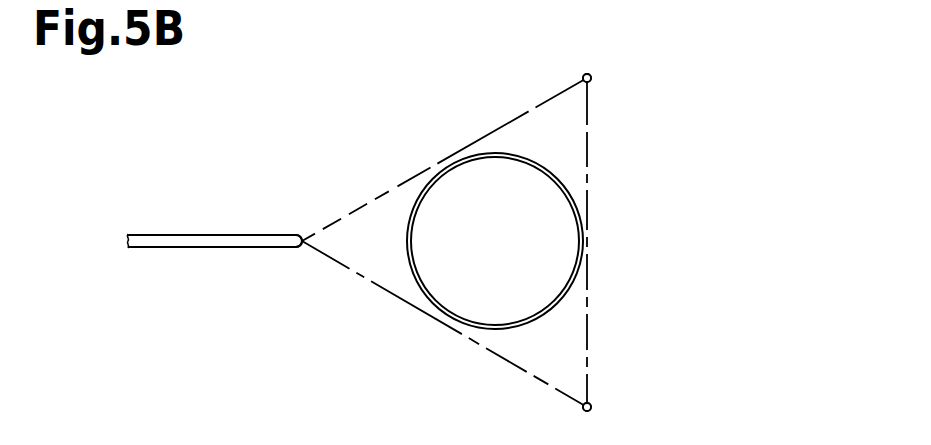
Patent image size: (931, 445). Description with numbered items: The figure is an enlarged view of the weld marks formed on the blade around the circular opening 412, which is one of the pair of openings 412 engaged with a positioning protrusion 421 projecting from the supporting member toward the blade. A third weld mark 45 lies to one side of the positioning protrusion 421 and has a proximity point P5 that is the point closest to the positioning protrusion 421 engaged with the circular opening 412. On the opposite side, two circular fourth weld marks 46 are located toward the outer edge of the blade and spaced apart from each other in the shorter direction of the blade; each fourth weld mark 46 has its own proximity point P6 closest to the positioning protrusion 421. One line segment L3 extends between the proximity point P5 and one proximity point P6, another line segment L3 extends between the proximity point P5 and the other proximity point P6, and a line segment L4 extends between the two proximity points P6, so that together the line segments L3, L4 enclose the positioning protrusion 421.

The third weld mark 45 is at (211, 235).
The proximity point P5 is at (303, 235).
The proximity point P6 is at (583, 77).
The fourth weld mark 46 is at (592, 78).
The opening 412 is at (552, 181).
The positioning protrusion 421 is at (550, 247).
The line segment L3 is at (432, 170).
The line segment L4 is at (587, 305).